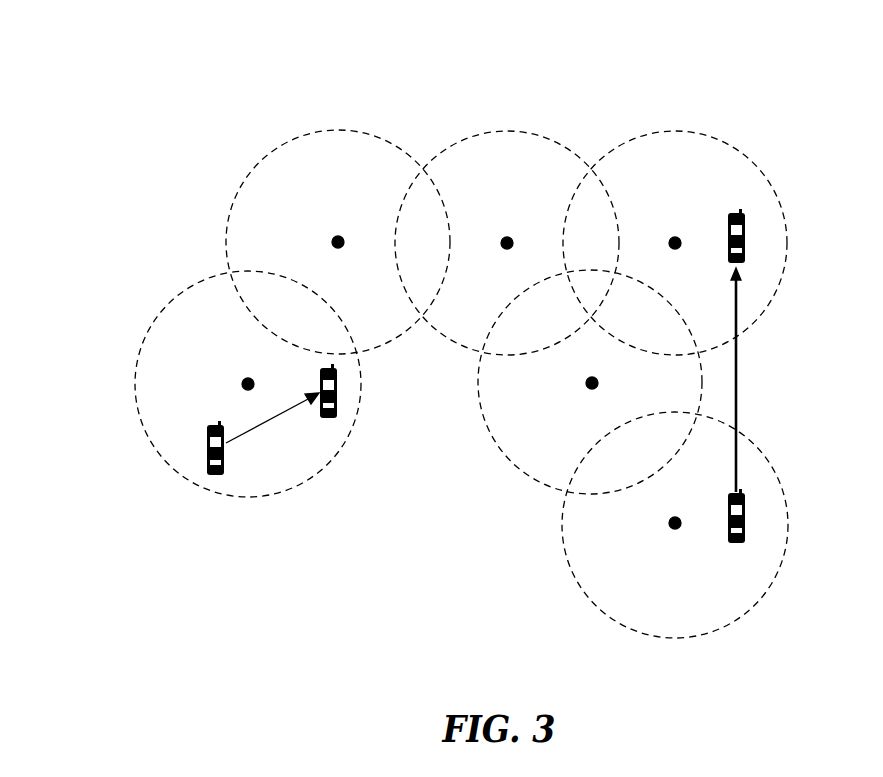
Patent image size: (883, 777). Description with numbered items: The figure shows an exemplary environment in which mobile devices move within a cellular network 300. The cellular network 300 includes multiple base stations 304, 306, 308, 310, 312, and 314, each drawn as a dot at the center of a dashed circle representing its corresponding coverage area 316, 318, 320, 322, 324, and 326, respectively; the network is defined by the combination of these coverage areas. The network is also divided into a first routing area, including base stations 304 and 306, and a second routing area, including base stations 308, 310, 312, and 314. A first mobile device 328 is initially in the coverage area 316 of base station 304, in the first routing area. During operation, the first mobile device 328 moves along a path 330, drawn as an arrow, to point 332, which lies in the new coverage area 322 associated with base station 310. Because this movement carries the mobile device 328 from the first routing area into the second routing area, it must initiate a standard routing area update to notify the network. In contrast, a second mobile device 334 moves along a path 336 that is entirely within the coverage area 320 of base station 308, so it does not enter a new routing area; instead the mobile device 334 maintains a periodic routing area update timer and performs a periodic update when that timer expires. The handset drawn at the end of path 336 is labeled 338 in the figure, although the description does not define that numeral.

The cellular network 300 is at (216, 111).
The base station 304 is at (671, 527).
The base station 306 is at (588, 387).
The base station 308 is at (244, 388).
The base station 310 is at (674, 237).
The base station 312 is at (505, 237).
The base station 314 is at (336, 236).
The coverage area 316 is at (618, 623).
The coverage area 318 is at (531, 477).
The coverage area 320 is at (190, 480).
The coverage area 322 is at (652, 132).
The coverage area 324 is at (482, 132).
The coverage area 326 is at (314, 131).
The first mobile device 328 is at (746, 526).
The path 330 is at (737, 378).
The point 332 is at (746, 240).
The second mobile device 334 is at (217, 477).
The path 336 is at (286, 418).
The mobile station 338 is at (339, 399).